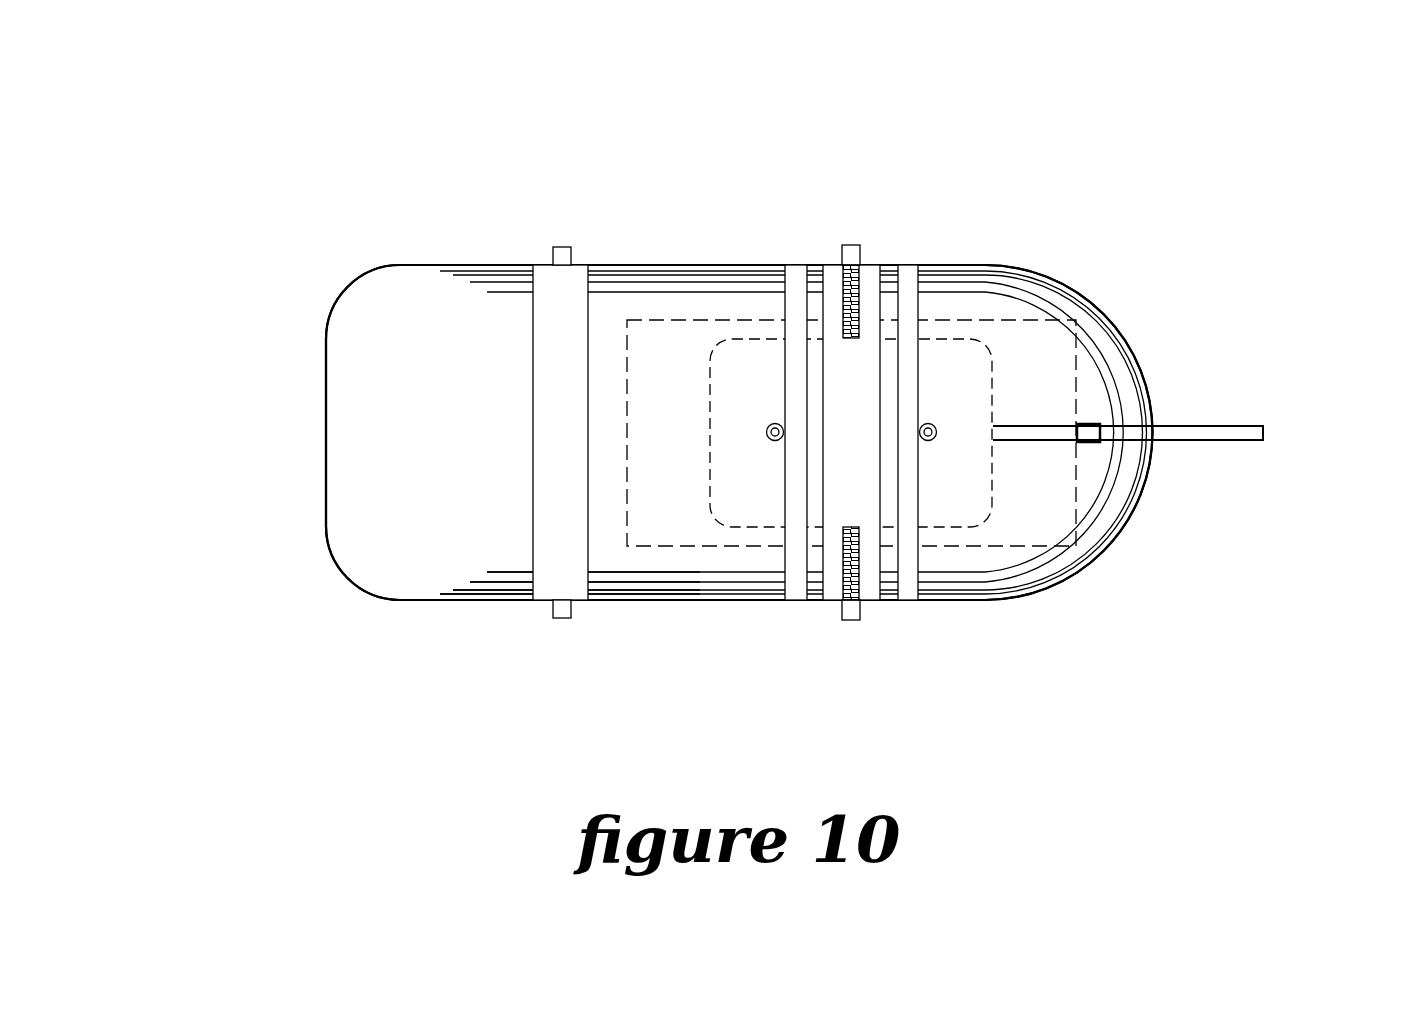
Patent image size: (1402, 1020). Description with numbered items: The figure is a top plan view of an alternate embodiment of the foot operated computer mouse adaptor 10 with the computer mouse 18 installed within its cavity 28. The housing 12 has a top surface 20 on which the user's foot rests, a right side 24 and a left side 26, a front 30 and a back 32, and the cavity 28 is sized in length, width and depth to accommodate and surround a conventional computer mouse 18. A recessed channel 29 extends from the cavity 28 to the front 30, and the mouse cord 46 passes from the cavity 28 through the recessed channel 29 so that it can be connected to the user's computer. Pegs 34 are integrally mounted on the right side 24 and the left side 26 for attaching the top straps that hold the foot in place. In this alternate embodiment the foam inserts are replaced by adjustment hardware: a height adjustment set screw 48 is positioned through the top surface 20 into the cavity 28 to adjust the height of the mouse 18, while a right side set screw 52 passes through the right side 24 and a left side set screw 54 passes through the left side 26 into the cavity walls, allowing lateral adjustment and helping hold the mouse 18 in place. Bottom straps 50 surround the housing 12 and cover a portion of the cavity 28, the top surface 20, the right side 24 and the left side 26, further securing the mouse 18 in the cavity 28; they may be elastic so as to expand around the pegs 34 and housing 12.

The foot operated computer mouse adaptor 10 is at (278, 231).
The housing 12 is at (340, 265).
The computer mouse 18 is at (968, 502).
The top surface 20 is at (457, 557).
The right side 24 is at (665, 602).
The left side 26 is at (668, 265).
The cavity 28 is at (1035, 368).
The recessed channel 29 is at (1105, 420).
The front 30 is at (1112, 545).
The back 32 is at (325, 525).
The pegs 34 is at (562, 247).
The mouse cord 46 is at (1207, 442).
The height adjustment set screw 48 is at (934, 425).
The bottom straps 50 is at (792, 270).
The right side set screw 52 is at (847, 563).
The left side set screw 54 is at (868, 292).